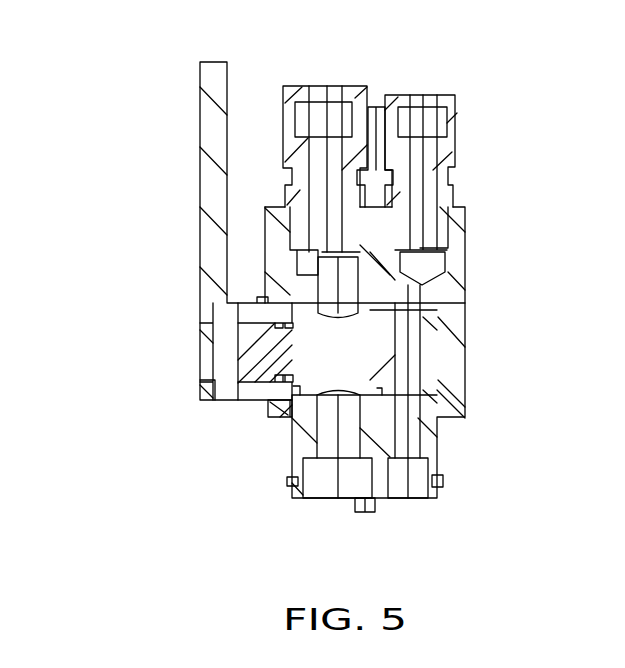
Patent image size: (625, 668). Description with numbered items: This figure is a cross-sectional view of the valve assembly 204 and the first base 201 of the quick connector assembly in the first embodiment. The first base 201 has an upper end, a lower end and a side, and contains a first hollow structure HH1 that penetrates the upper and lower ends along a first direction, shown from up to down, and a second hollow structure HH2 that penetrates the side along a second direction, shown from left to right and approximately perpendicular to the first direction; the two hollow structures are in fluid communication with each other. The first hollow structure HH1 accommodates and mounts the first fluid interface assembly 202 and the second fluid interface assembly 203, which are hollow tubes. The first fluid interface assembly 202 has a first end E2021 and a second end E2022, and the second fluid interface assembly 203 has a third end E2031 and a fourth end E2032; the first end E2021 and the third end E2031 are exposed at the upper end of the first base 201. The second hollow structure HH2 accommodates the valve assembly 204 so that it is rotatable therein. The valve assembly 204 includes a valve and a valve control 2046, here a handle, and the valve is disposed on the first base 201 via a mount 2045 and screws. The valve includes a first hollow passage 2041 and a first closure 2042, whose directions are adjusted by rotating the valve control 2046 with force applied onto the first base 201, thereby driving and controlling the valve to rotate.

The first base 201 is at (475, 333).
The first fluid interface assembly 202 is at (283, 88).
The second fluid interface assembly 203 is at (447, 155).
The valve assembly 204 is at (183, 393).
The first hollow passage 2041 is at (332, 350).
The first closure 2042 is at (405, 372).
The mount 2045 is at (283, 402).
The valve control 2046 is at (212, 182).
The first end E2021 is at (337, 93).
The second end E2022 is at (352, 252).
The third end E2031 is at (427, 93).
The fourth end E2032 is at (428, 250).
The first hollow structure HH1 is at (457, 265).
The second hollow structure HH2 is at (447, 382).